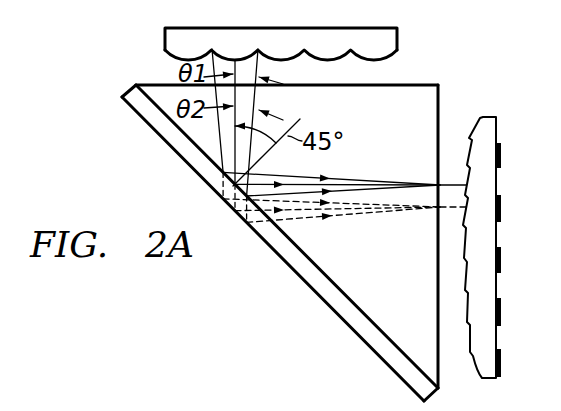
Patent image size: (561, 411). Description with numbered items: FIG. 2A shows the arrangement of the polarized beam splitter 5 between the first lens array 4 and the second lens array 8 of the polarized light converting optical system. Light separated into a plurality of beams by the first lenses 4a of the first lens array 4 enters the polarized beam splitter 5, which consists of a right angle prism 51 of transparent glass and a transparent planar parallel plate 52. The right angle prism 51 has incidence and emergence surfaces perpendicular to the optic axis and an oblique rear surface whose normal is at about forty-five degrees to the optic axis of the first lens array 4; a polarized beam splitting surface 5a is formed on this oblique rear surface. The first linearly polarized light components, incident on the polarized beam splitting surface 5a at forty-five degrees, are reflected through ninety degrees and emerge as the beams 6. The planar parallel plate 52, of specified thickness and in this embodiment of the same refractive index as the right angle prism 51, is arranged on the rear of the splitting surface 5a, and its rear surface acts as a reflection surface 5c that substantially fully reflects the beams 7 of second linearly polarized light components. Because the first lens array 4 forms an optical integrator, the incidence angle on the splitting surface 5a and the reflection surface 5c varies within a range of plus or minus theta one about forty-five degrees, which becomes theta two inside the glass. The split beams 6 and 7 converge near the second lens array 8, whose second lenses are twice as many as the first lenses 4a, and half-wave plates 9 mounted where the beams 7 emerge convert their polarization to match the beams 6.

The first lens array 4 is at (285, 39).
The first lens 4a is at (165, 56).
The polarized beam splitter 5 is at (310, 248).
The polarized beam splitting surface 5a is at (406, 357).
The reflection surface 5c is at (349, 327).
The right angle prism 51 is at (434, 364).
The transparent planar parallel plate 52 is at (280, 243).
The beams of first linearly polarized light components 6 is at (380, 183).
The beams of second linearly polarized light components 7 is at (351, 211).
The second lens array 8 is at (486, 117).
The half-wave plate 9 is at (502, 360).